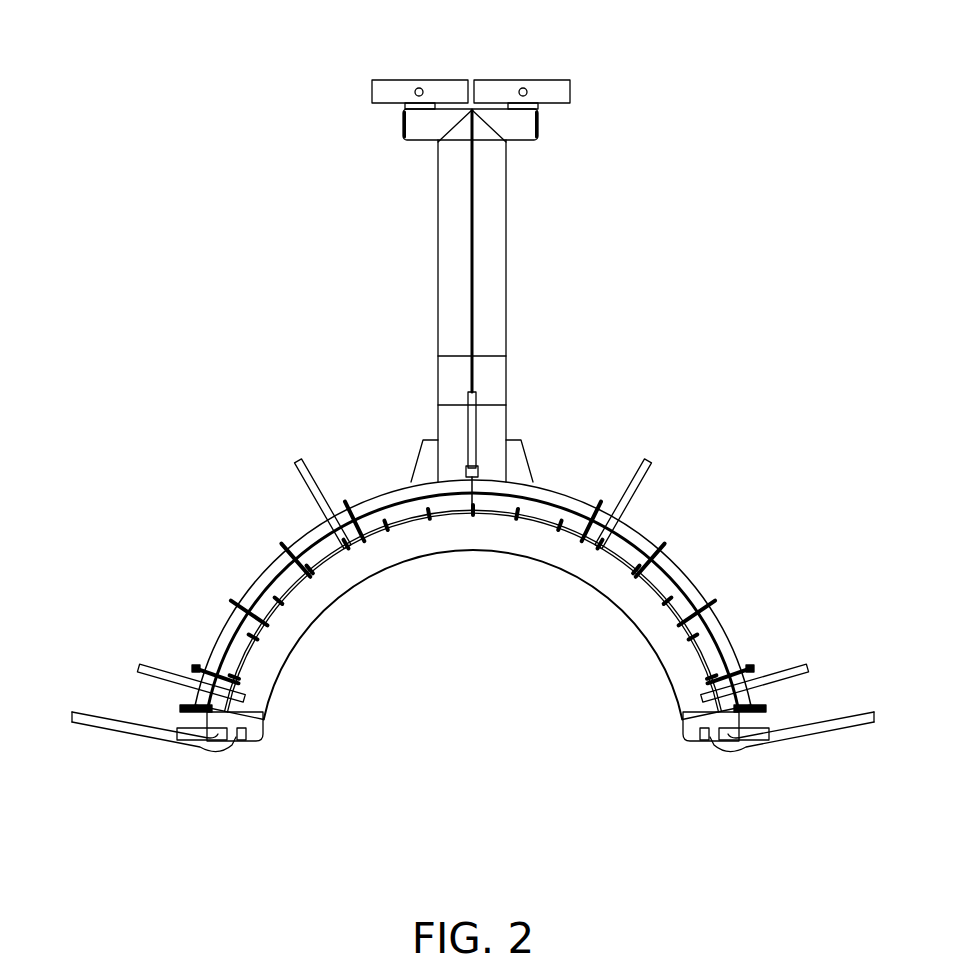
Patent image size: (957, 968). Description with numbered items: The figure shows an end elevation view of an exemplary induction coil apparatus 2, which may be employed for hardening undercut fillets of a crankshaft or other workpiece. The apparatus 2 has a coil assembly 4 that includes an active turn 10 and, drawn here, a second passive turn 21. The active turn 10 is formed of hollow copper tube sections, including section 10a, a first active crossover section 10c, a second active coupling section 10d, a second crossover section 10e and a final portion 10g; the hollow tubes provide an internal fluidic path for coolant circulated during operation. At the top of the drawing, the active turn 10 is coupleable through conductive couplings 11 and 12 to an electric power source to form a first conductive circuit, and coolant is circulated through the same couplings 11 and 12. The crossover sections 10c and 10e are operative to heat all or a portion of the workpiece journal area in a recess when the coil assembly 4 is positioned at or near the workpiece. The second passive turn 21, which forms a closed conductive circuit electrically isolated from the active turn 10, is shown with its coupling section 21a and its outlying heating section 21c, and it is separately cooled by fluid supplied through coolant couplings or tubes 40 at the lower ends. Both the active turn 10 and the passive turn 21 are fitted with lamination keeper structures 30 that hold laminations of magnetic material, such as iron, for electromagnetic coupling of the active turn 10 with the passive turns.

The induction coil apparatus 2 is at (186, 40).
The coil assembly 4 is at (292, 198).
The active turn 10 is at (397, 338).
The active turn section 10a is at (438, 297).
The final portion of active turn 10g is at (506, 297).
The first active crossover section 10c is at (262, 737).
The second active coupling section 10d is at (270, 562).
The second crossover section 10e is at (688, 737).
The conductive coupling 11 is at (371, 92).
The conductive coupling 12 is at (571, 92).
The second passive turn 21 is at (578, 681).
The coupling section of second passive turn 21a is at (231, 631).
The outlying heating section 21c is at (552, 554).
The lamination keeper structures 30 is at (342, 497).
The coolant couplings 40 is at (76, 720).